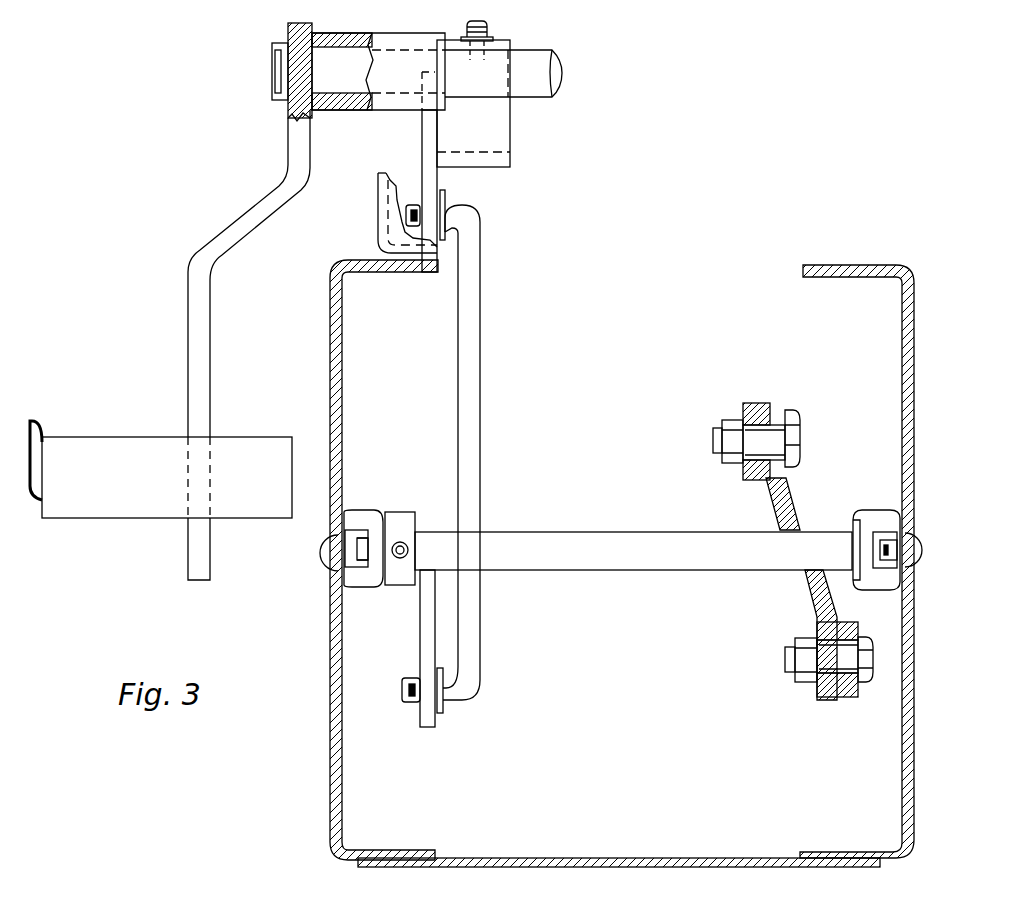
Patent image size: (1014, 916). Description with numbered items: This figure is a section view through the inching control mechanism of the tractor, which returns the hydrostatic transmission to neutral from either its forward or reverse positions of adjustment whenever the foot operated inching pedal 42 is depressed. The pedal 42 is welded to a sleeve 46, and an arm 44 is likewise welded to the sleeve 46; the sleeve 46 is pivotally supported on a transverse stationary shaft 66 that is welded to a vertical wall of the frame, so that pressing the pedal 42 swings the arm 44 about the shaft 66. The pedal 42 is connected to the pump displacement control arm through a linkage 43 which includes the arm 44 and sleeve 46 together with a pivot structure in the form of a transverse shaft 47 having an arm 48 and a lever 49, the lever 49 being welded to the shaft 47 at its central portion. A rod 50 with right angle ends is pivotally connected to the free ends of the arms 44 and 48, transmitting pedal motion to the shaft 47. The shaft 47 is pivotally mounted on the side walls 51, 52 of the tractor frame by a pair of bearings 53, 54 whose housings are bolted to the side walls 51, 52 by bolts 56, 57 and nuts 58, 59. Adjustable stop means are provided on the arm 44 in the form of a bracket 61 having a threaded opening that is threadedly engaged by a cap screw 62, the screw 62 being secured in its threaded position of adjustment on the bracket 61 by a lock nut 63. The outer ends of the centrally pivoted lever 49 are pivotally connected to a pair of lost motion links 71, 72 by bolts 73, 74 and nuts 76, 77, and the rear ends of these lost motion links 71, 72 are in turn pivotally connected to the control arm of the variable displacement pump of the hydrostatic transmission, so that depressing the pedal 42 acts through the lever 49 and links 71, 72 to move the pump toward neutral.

The inching pedal 42 is at (108, 517).
The linkage 43 is at (532, 402).
The arm 44 is at (422, 160).
The sleeve 46 is at (366, 110).
The transverse shaft 47 is at (565, 531).
The arm 48 is at (420, 640).
The lever 49 is at (788, 508).
The rod 50 is at (473, 467).
The side wall 51 is at (342, 452).
The side wall 52 is at (902, 440).
The bearing 53 is at (363, 512).
The bearing 54 is at (880, 512).
The bolt 56 is at (320, 553).
The bolt 57 is at (872, 550).
The nut 58 is at (358, 568).
The nut 59 is at (888, 572).
The bracket 61 is at (510, 130).
The cap screw 62 is at (487, 37).
The lock nut 63 is at (483, 48).
The transverse stationary shaft 66 is at (560, 57).
The lost motion link 71 is at (776, 392).
The lost motion link 72 is at (840, 700).
The bolt 73 is at (803, 402).
The bolt 74 is at (866, 683).
The nut 76 is at (730, 463).
The nut 77 is at (803, 683).